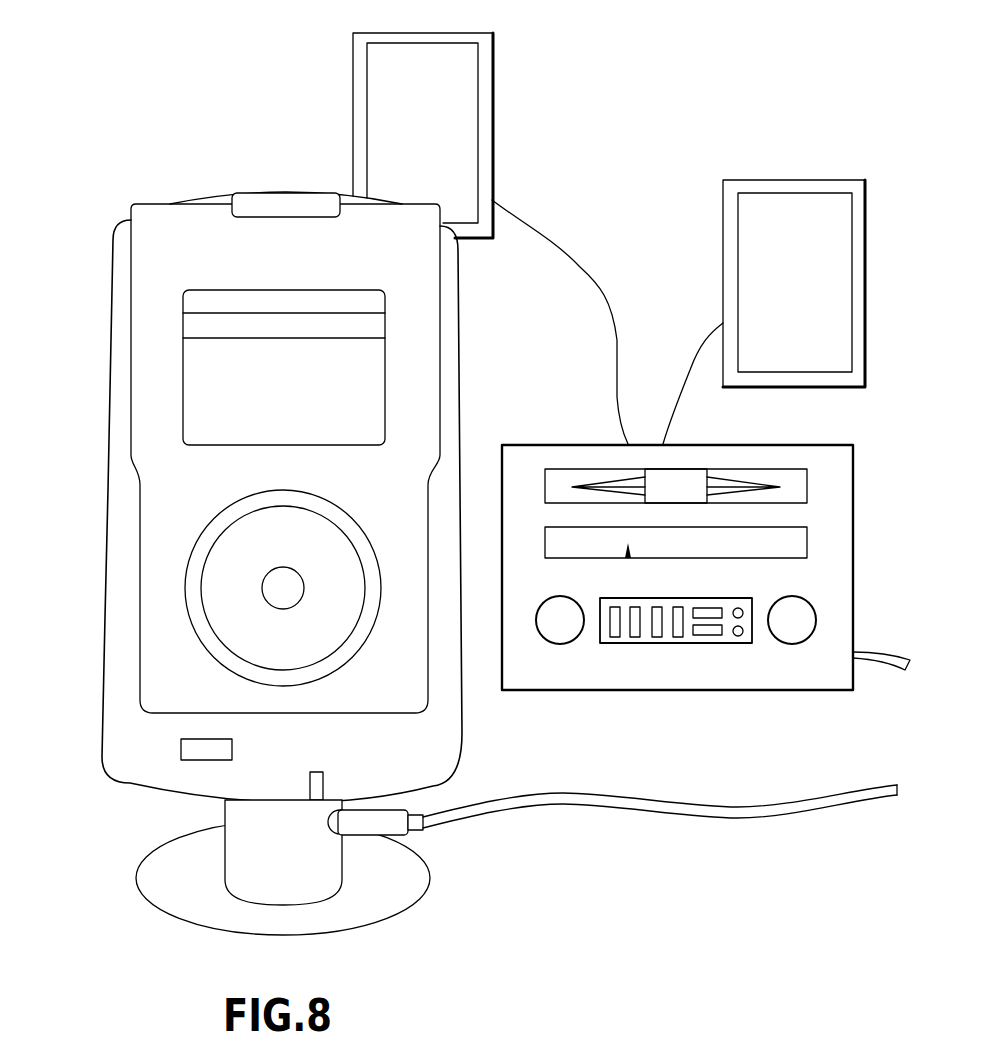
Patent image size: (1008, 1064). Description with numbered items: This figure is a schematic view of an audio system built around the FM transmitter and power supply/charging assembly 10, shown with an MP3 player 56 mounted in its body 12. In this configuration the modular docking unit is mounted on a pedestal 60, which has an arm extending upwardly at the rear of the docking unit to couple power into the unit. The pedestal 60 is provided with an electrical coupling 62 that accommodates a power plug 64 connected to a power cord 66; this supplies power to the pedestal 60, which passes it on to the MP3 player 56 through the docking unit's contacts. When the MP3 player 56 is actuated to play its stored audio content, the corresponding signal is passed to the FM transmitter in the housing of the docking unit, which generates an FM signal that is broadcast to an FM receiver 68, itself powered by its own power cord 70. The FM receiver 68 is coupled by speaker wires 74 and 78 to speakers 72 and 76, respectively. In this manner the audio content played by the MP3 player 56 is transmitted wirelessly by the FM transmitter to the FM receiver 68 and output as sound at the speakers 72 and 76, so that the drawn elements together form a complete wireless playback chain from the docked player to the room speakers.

The FM transmitter and power supply/charging assembly 10 is at (250, 522).
The body 12 is at (105, 617).
The MP3 player 56 is at (134, 207).
The pedestal 60 is at (432, 893).
The electrical coupling 62 is at (330, 827).
The power plug 64 is at (393, 813).
The power cord 66 is at (735, 813).
The FM receiver 68 is at (668, 690).
The power cord 70 is at (878, 660).
The speaker 72 is at (472, 88).
The speaker wire 74 is at (590, 277).
The speaker 76 is at (783, 203).
The speaker wire 78 is at (690, 360).